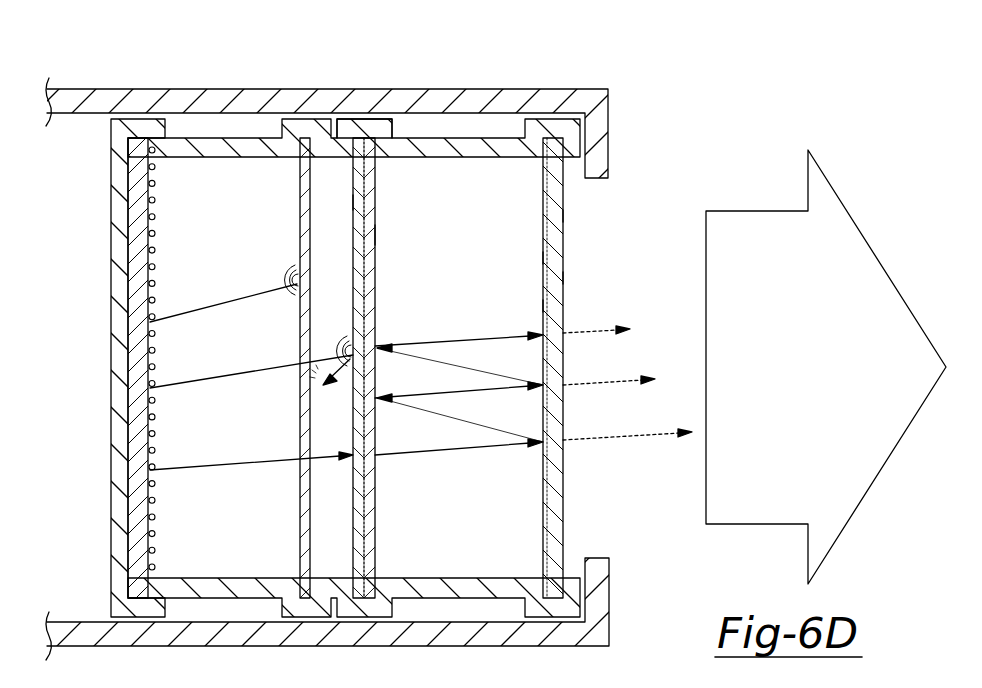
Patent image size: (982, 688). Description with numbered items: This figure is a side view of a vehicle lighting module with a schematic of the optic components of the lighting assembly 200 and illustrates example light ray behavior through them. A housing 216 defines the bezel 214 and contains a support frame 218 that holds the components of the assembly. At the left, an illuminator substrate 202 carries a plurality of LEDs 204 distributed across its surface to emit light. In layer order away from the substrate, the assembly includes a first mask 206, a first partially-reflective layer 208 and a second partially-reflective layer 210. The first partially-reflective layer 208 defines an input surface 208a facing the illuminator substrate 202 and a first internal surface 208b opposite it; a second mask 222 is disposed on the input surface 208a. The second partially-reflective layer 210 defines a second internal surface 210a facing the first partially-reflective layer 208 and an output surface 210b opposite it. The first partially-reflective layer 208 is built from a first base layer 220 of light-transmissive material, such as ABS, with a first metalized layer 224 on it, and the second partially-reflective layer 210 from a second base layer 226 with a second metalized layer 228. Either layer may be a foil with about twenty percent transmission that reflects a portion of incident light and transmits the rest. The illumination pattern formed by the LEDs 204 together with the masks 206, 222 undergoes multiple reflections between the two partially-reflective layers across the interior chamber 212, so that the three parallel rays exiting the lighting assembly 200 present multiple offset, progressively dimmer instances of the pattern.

The lighting assembly 200 is at (756, 108).
The illuminator substrate 202 is at (134, 294).
The LEDs 204 is at (154, 165).
The first mask 206 is at (300, 218).
The first partially-reflective layer 208 is at (336, 304).
The input surface 208a is at (353, 305).
The first internal surface 208b is at (375, 275).
The second partially-reflective layer 210 is at (553, 125).
The second internal surface 210a is at (543, 305).
The output surface 210b is at (563, 278).
The interior chamber 212 is at (472, 539).
The bezel 214 is at (605, 150).
The housing 216 is at (462, 106).
The support frame 218 is at (250, 152).
The first base layer 220 is at (364, 203).
The second mask 222 is at (353, 194).
The first metalized layer 224 is at (375, 234).
The second base layer 226 is at (563, 215).
The second metalized layer 228 is at (543, 258).